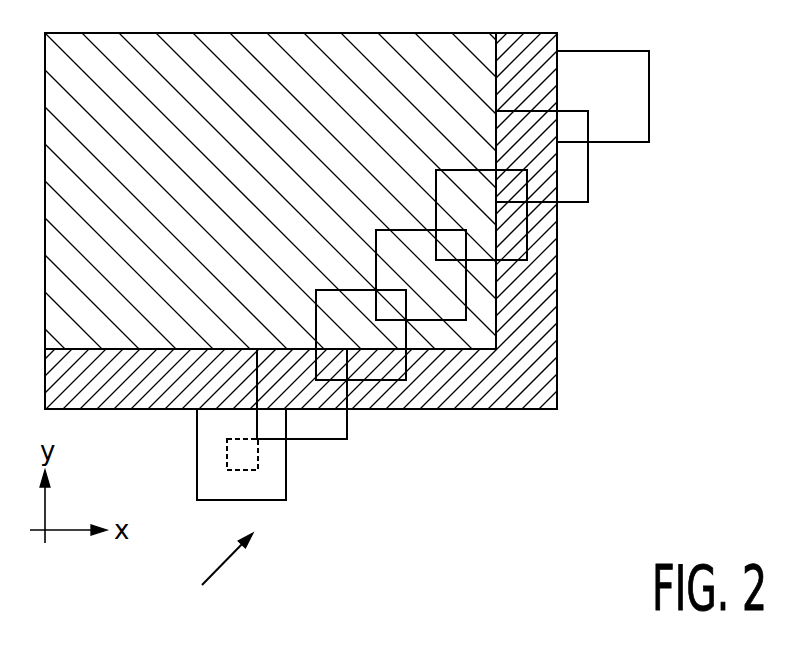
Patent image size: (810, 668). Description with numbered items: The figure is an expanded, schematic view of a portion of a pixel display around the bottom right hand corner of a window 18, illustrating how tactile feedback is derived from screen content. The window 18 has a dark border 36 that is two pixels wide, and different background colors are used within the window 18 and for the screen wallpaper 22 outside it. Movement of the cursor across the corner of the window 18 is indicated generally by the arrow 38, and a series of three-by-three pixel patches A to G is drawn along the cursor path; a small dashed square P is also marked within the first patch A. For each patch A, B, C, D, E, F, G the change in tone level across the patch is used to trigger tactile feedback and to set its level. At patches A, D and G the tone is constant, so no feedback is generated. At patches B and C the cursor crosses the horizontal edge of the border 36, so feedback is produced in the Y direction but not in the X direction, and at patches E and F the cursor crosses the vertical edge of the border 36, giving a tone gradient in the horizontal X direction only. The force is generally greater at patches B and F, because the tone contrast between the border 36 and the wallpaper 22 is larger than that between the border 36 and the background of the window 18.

The window 18 is at (185, 212).
The screen wallpaper 22 is at (516, 492).
The dark border 36 is at (540, 355).
The arrow 38 is at (214, 572).
The pixel patch A is at (286, 488).
The pixel patch B is at (347, 430).
The pixel patch C is at (316, 310).
The pixel patch D is at (376, 245).
The pixel patch E is at (436, 182).
The pixel patch F is at (588, 193).
The pixel patch G is at (649, 128).
The reference point P is at (226, 453).